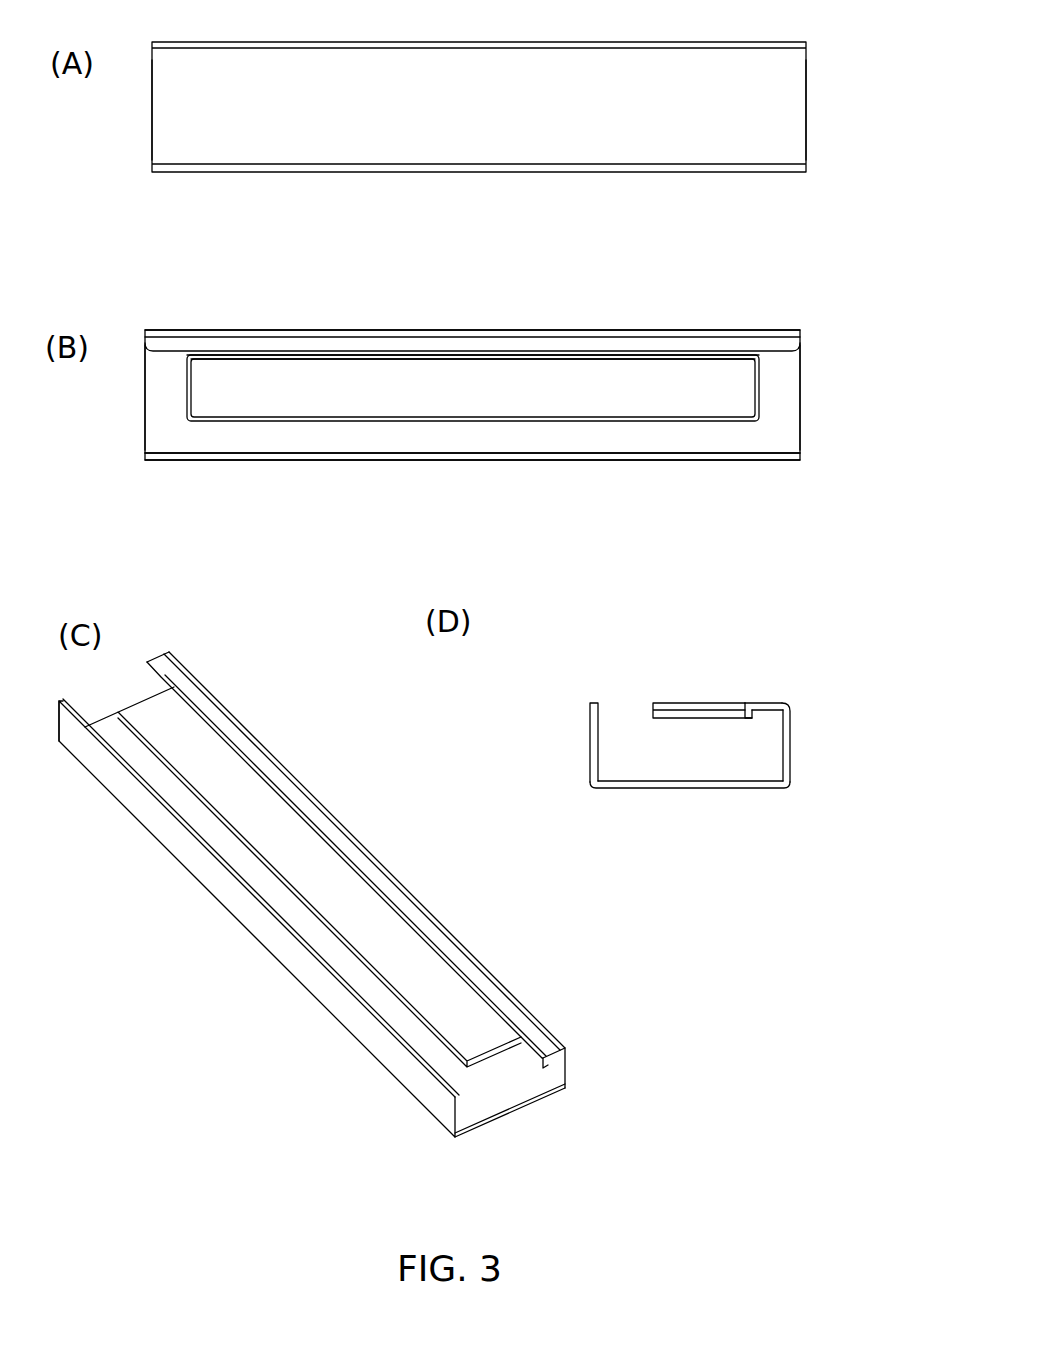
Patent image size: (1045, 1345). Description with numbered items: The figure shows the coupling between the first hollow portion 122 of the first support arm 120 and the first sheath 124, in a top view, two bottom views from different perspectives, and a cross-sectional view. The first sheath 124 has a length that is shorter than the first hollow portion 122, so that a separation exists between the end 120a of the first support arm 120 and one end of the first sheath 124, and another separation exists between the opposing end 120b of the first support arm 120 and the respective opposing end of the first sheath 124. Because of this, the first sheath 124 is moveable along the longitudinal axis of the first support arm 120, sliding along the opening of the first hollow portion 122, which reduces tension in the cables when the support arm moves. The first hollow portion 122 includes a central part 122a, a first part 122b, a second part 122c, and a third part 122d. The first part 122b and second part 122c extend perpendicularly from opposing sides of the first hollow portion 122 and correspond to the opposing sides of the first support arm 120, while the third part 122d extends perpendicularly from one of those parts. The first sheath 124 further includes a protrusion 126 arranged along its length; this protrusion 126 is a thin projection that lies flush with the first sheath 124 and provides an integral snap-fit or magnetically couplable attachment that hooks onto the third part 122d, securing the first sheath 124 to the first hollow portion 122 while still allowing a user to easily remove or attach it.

The first support arm 120 is at (479, 88).
The end of the first support arm 120a is at (167, 293).
The opposing end of the first support arm 120b is at (803, 255).
The first hollow portion 122 is at (491, 654).
The central part 122a is at (530, 778).
The first part 122b is at (534, 690).
The second part 122c is at (429, 792).
The third part 122d is at (524, 661).
The first sheath 124 is at (422, 680).
The protrusion 126 is at (462, 655).